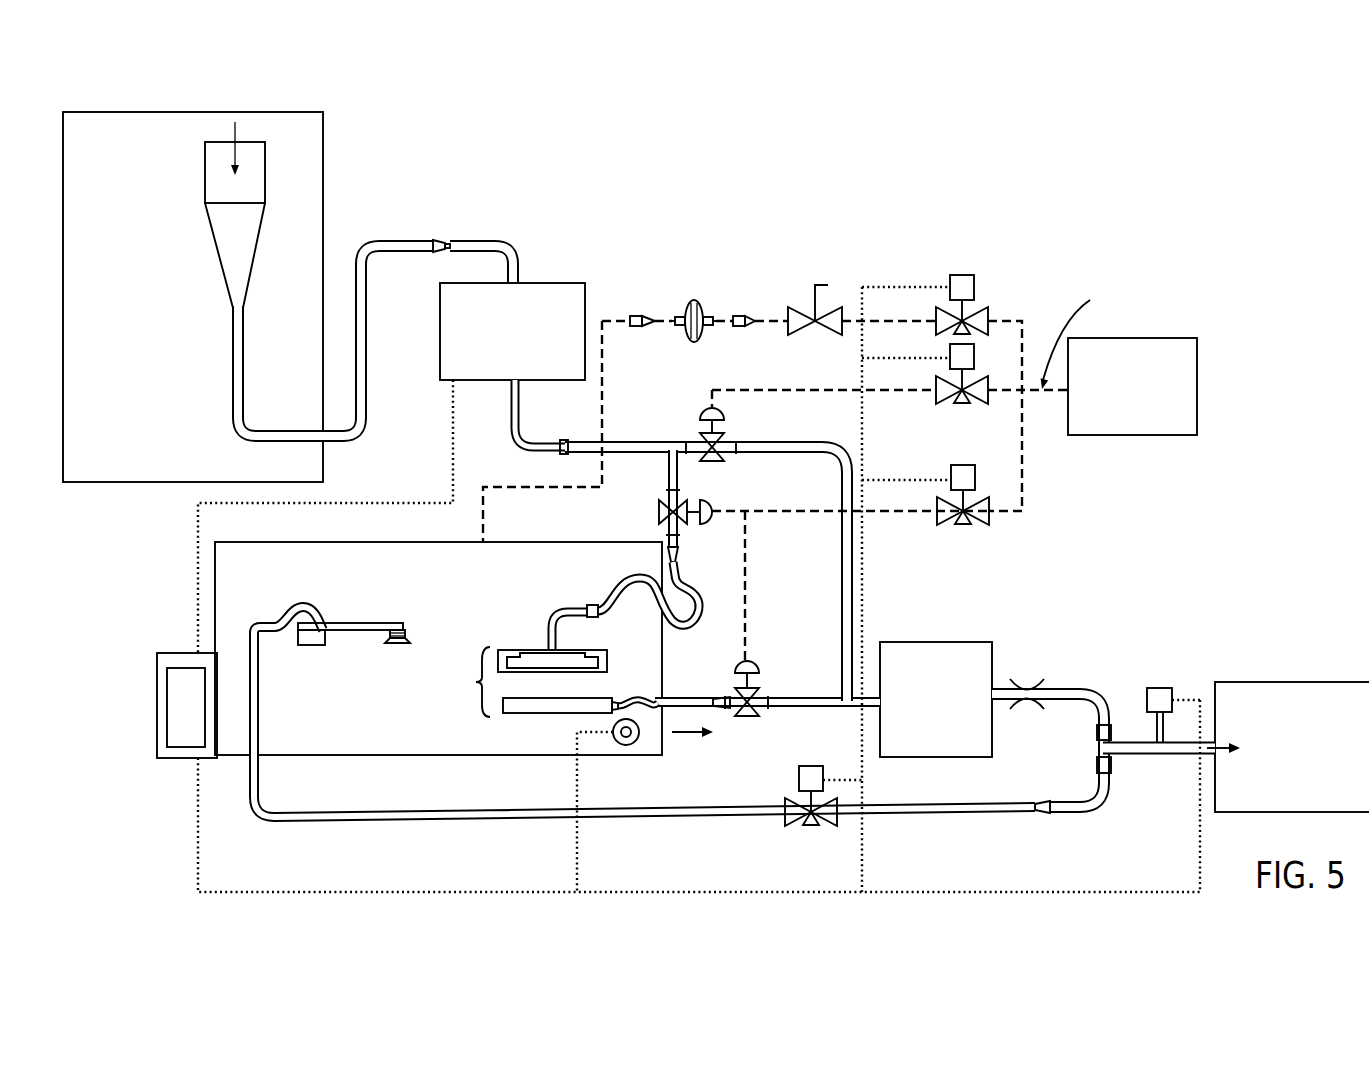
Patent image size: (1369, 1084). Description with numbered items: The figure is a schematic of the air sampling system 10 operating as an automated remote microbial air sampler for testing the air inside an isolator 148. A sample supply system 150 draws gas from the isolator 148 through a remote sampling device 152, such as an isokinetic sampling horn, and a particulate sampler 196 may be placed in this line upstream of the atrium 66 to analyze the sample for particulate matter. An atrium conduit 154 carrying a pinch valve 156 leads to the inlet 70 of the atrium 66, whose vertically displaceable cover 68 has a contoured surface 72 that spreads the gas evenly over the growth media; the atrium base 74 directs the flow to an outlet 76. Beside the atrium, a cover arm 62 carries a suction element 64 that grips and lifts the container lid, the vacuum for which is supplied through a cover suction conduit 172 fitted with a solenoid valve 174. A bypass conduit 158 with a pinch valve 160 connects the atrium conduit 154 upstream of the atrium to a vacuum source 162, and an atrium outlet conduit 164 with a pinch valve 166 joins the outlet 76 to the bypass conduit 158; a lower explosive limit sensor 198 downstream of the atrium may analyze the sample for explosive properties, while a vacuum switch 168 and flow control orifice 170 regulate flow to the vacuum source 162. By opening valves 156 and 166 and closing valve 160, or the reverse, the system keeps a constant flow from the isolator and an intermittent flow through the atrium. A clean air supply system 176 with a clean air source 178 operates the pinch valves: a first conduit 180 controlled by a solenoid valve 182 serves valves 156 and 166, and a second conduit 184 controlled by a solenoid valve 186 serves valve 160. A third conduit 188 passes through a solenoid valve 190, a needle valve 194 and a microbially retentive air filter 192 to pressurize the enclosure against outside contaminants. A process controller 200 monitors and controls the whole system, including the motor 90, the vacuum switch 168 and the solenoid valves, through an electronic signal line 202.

The air sampling system 10 is at (382, 532).
The cover arm 62 is at (350, 622).
The suction element 64 is at (400, 646).
The atrium 66 is at (476, 682).
The cover 68 is at (520, 650).
The inlet 70 is at (558, 613).
The contoured surface 72 is at (580, 670).
The base 74 is at (503, 713).
The outlet 76 is at (622, 699).
The motor 90 is at (640, 735).
The isolator 148 is at (122, 483).
The sample supply system 150 is at (430, 234).
The remote sampling device 152 is at (268, 172).
The atrium conduit 154 is at (667, 473).
The valve 156 is at (712, 524).
The bypass conduit 158 is at (845, 445).
The valve 160 is at (722, 412).
The vacuum source 162 is at (1289, 682).
The atrium outlet conduit 164 is at (812, 708).
The valve 166 is at (758, 663).
The vacuum switch 168 is at (1157, 688).
The flow control orifice 170 is at (1026, 688).
The cover suction conduit 172 is at (425, 813).
The valve 174 is at (812, 766).
The clean air supply system 176 is at (1085, 333).
The clean air source 178 is at (1133, 338).
The first conduit 180 is at (766, 514).
The solenoid valve 182 is at (963, 465).
The second conduit 184 is at (763, 390).
The solenoid valve 186 is at (948, 357).
The third conduit 188 is at (606, 404).
The solenoid valve 190 is at (968, 275).
The microbially retentive air filter 192 is at (694, 300).
The needle valve 194 is at (840, 312).
The particulate sampler 196 is at (584, 282).
The lower explosive limit sensor 198 is at (930, 642).
The process controller 200 is at (157, 693).
The electronic signal line 202 is at (905, 287).